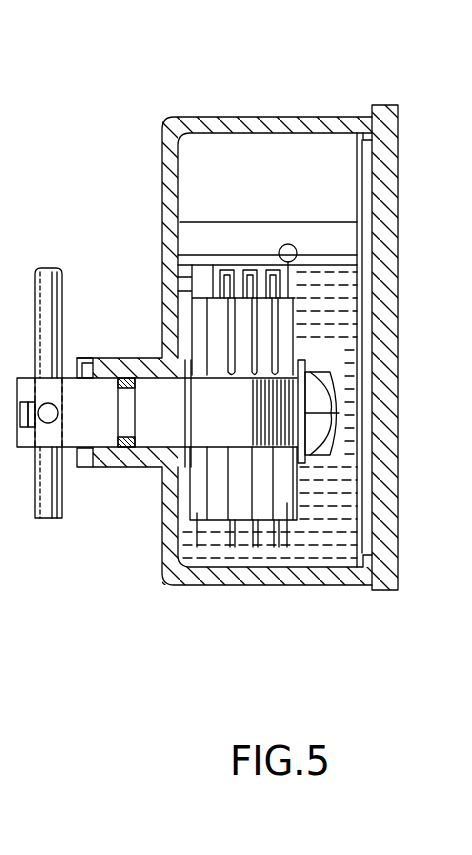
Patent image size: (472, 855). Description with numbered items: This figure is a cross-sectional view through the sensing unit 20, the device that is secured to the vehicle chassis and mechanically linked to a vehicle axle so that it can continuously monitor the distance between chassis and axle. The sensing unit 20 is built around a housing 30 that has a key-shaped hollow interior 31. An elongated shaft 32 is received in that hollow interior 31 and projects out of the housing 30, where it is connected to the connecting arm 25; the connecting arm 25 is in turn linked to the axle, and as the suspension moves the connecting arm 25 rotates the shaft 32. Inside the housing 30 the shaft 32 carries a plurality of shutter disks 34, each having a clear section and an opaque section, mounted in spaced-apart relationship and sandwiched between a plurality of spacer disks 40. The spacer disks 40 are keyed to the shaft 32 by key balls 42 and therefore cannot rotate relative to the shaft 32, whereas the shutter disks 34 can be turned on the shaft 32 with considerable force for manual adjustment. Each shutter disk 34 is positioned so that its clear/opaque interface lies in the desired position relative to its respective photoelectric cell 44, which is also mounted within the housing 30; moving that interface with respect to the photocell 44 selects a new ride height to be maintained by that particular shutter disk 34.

The sensing unit 20 is at (245, 106).
The connecting arm 25 is at (63, 302).
The housing 30 is at (163, 128).
The key-shaped hollow interior 31 is at (337, 541).
The shaft 32 is at (78, 433).
The shutter disks 34 is at (235, 520).
The spacer disks 40 is at (197, 517).
The key balls 42 is at (287, 374).
The photoelectric cells 44 is at (253, 270).